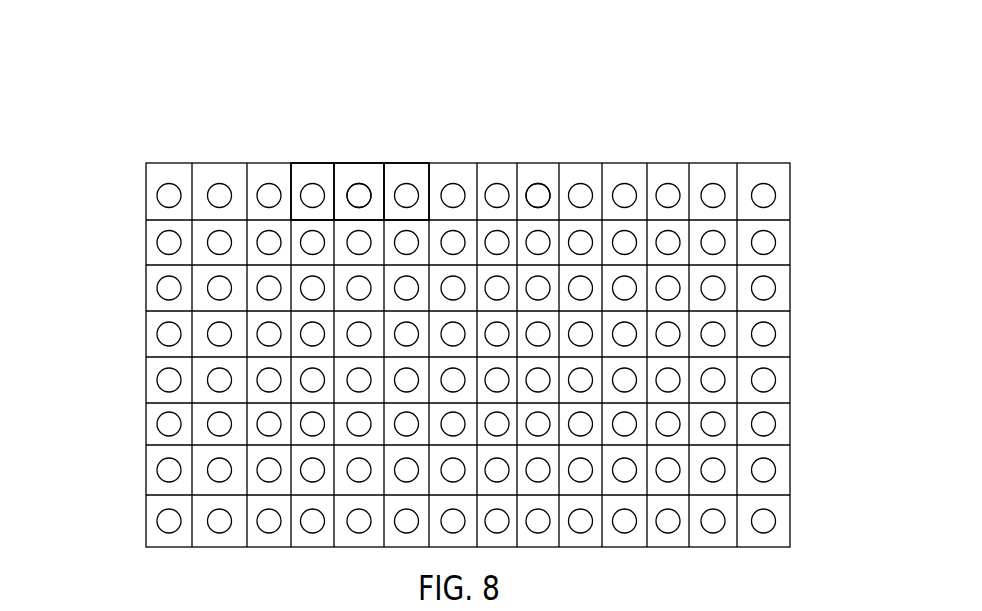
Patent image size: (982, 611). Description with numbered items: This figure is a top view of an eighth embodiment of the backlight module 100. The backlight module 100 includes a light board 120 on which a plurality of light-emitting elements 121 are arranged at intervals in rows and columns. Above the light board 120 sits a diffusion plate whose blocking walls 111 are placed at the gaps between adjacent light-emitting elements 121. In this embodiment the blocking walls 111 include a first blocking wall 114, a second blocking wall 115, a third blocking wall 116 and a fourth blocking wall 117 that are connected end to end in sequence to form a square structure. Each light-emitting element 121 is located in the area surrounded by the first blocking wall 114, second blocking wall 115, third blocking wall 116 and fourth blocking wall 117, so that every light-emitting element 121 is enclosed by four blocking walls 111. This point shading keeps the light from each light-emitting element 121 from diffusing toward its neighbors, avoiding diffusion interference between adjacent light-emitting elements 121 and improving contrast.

The backlight module 100 is at (167, 71).
The blocking walls 111 is at (248, 55).
The first blocking wall 114 is at (337, 182).
The second blocking wall 115 is at (355, 163).
The third blocking wall 116 is at (345, 218).
The fourth blocking wall 117 is at (387, 182).
The light board 120 is at (790, 163).
The light-emitting elements 121 is at (535, 187).